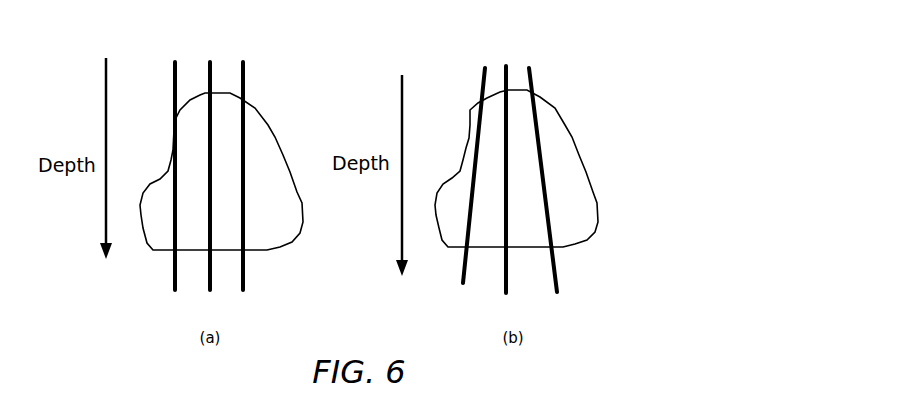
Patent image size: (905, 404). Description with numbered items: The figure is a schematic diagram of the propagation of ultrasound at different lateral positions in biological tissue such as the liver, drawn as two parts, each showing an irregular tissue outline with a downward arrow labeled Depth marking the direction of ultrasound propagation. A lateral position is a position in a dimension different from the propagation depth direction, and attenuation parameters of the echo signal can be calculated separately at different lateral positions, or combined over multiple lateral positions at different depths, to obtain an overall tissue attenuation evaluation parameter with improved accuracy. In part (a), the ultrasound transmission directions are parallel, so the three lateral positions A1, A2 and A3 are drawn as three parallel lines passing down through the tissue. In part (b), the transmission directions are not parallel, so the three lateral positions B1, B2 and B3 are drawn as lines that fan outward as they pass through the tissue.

The lateral position A1 is at (171, 166).
The lateral position A2 is at (207, 166).
The lateral position A3 is at (248, 166).
The lateral position B1 is at (471, 160).
The lateral position B2 is at (504, 165).
The lateral position B3 is at (543, 164).